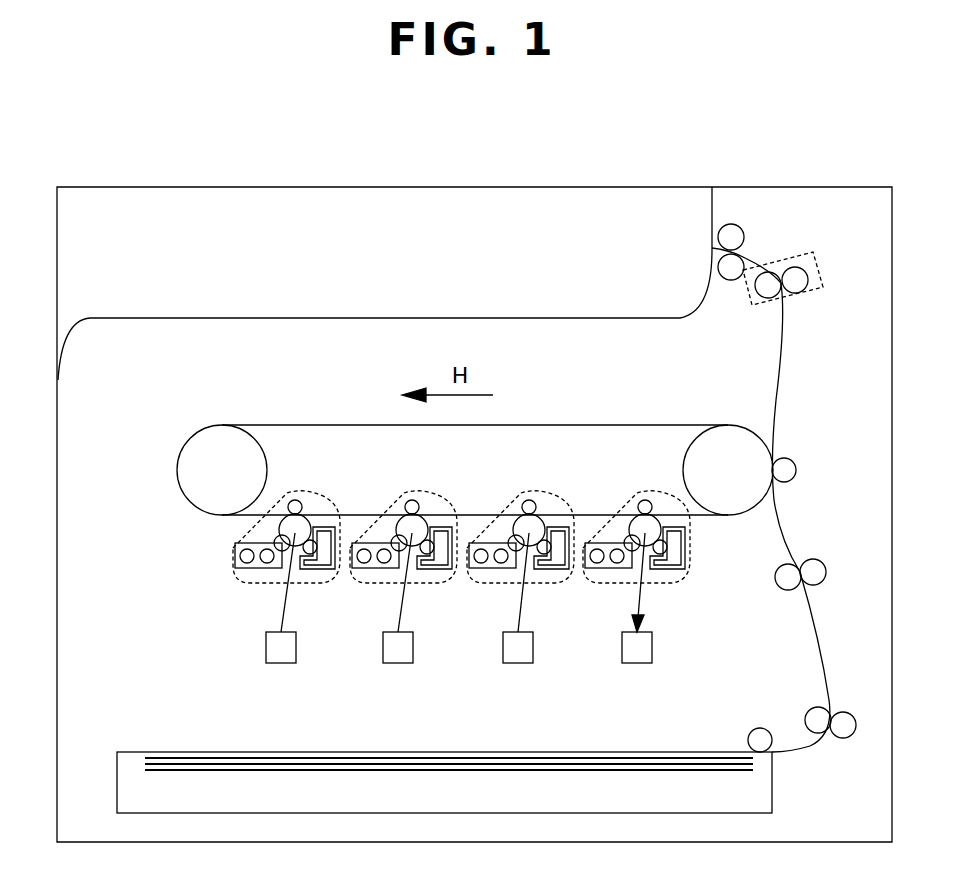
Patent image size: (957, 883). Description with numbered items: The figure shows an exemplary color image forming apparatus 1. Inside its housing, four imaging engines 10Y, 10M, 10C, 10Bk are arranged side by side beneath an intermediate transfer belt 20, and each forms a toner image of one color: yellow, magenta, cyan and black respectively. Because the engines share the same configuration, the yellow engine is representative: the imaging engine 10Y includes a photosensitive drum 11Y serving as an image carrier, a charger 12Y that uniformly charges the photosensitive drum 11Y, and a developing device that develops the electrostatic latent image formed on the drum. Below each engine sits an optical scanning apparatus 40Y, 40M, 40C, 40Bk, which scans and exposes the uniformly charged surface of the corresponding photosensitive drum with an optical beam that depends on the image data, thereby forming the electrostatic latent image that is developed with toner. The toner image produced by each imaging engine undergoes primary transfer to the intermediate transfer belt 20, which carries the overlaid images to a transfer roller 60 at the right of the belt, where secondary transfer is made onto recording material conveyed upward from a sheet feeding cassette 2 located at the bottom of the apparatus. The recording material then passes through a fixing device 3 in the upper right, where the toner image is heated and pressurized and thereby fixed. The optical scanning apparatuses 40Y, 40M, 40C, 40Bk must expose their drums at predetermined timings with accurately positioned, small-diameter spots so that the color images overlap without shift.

The image forming apparatus 1 is at (661, 132).
The sheet feeding cassette 2 is at (140, 751).
The fixing device 3 is at (793, 250).
The intermediate transfer belt 20 is at (298, 424).
The transfer roller 60 is at (790, 458).
The imaging engine 10Y is at (263, 532).
The imaging engine 10M is at (407, 492).
The imaging engine 10C is at (524, 492).
The imaging engine 10Bk is at (632, 492).
The photosensitive drum 11Y is at (273, 542).
The charger 12Y is at (325, 572).
The optical scanning apparatus 40Y is at (281, 664).
The optical scanning apparatus 40M is at (398, 664).
The optical scanning apparatus 40C is at (518, 664).
The optical scanning apparatus 40Bk is at (638, 664).